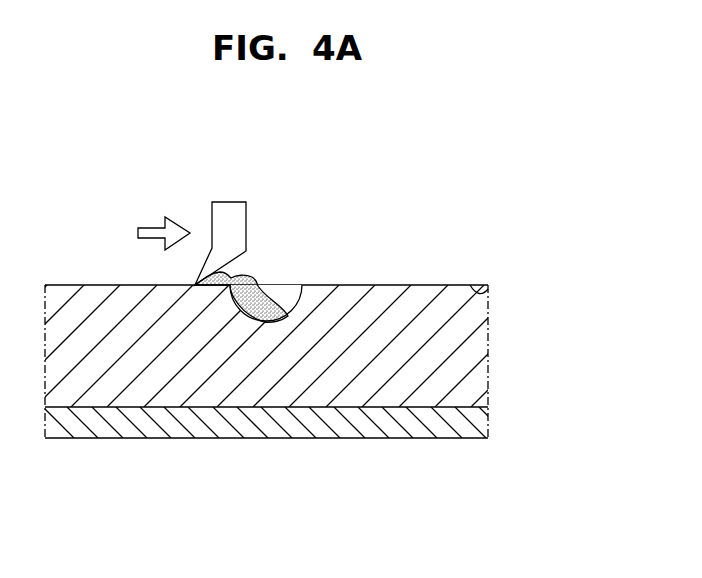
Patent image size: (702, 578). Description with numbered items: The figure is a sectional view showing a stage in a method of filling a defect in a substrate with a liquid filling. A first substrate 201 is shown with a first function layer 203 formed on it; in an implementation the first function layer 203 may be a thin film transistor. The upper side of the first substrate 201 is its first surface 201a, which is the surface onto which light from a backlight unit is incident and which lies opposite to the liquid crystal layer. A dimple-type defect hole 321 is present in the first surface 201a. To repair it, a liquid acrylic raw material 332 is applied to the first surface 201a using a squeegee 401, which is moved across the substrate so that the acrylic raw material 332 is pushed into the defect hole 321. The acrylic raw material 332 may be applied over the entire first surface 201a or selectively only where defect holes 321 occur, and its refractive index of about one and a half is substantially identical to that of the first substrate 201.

The first substrate 201 is at (473, 355).
The first surface 201a is at (473, 293).
The first function layer 203 is at (473, 422).
The dimple-type defect hole 321 is at (290, 284).
The acrylic raw material 332 is at (258, 284).
The squeegee 401 is at (228, 212).